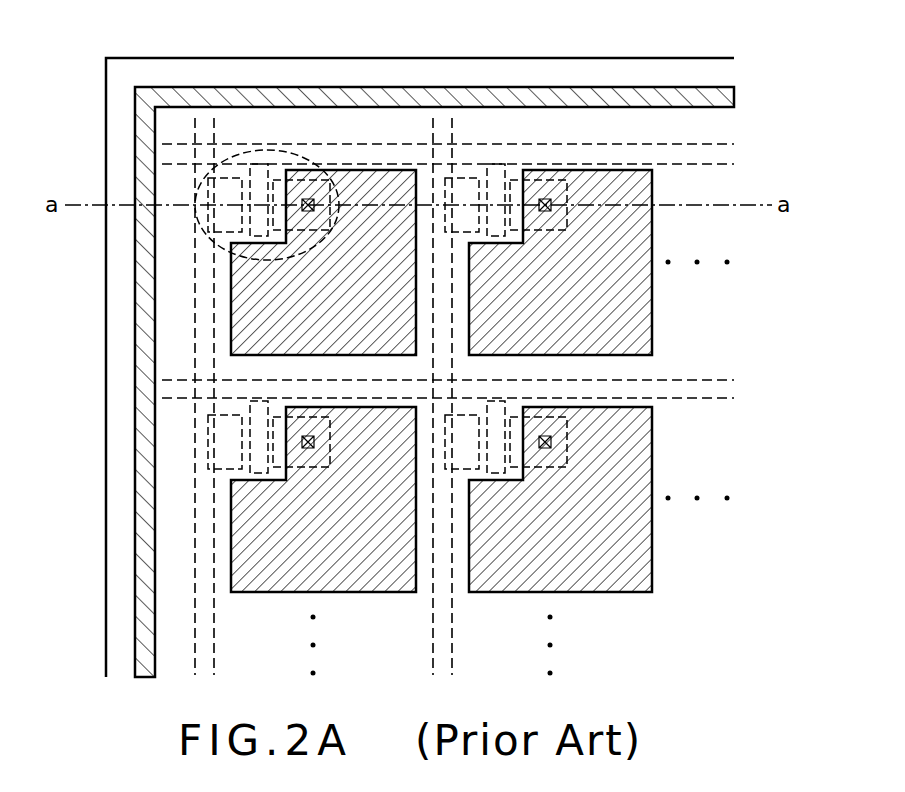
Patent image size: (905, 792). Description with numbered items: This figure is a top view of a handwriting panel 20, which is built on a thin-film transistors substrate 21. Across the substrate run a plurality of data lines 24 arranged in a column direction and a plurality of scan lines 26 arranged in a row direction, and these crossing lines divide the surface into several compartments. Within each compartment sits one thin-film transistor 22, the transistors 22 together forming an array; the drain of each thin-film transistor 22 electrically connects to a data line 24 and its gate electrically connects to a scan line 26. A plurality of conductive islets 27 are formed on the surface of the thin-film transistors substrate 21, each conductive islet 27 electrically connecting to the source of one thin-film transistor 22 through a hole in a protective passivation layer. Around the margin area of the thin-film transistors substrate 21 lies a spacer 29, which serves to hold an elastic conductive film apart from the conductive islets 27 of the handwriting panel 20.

The handwriting panel 20 is at (636, 56).
The thin-film transistors substrate 21 is at (730, 659).
The thin-film transistor 22 is at (200, 240).
The data line 24 is at (203, 571).
The scan line 26 is at (580, 152).
The conductive islet 27 is at (388, 329).
The spacer 29 is at (736, 97).